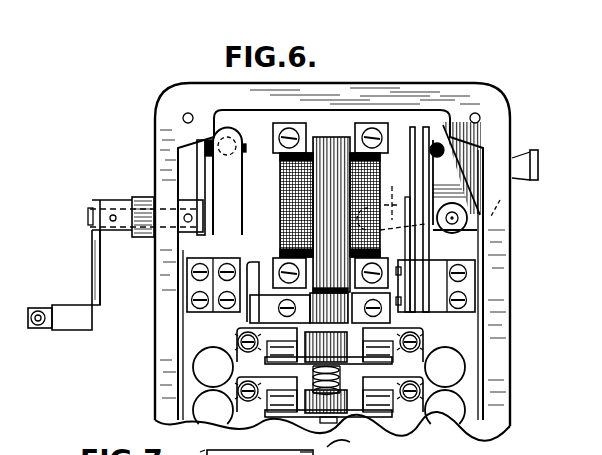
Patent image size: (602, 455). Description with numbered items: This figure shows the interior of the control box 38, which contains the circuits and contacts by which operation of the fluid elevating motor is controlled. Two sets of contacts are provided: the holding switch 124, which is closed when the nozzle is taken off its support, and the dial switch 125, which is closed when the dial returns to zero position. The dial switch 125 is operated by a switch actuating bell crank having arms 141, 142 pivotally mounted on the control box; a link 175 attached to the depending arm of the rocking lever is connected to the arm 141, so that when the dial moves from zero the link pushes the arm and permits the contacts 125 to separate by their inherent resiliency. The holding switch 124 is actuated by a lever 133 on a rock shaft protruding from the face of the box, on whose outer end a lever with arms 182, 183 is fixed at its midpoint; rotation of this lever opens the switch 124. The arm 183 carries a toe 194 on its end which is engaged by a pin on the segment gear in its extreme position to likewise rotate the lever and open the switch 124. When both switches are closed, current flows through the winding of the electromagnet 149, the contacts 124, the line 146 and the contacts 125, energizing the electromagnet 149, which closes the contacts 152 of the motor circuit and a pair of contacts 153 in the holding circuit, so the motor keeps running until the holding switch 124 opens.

In FIG. 6, the control box 38 is at (512, 257).
In FIG. 6, the holding switch 124 is at (419, 126).
In FIG. 7, the holding switch 124 is at (345, 445).
In FIG. 6, the dial switch 125 is at (230, 174).
In FIG. 7, the dial switch 125 is at (199, 450).
In FIG. 6, the lever 133 is at (443, 175).
In FIG. 6, the switch actuating arm 141 is at (93, 245).
In FIG. 6, the bell crank arm 142 is at (200, 162).
In FIG. 6, the line 146 is at (405, 329).
In FIG. 7, the line 146 is at (288, 450).
In FIG. 6, the electromagnet 149 is at (293, 197).
In FIG. 6, the motor circuit contacts 152 is at (393, 403).
In FIG. 6, the holding circuit contacts 153 is at (385, 353).
In FIG. 6, the link 175 is at (38, 312).
In FIG. 6, the lever arm 182 is at (391, 198).
In FIG. 6, the lever arm 183 is at (518, 178).
In FIG. 6, the toe 194 is at (445, 203).